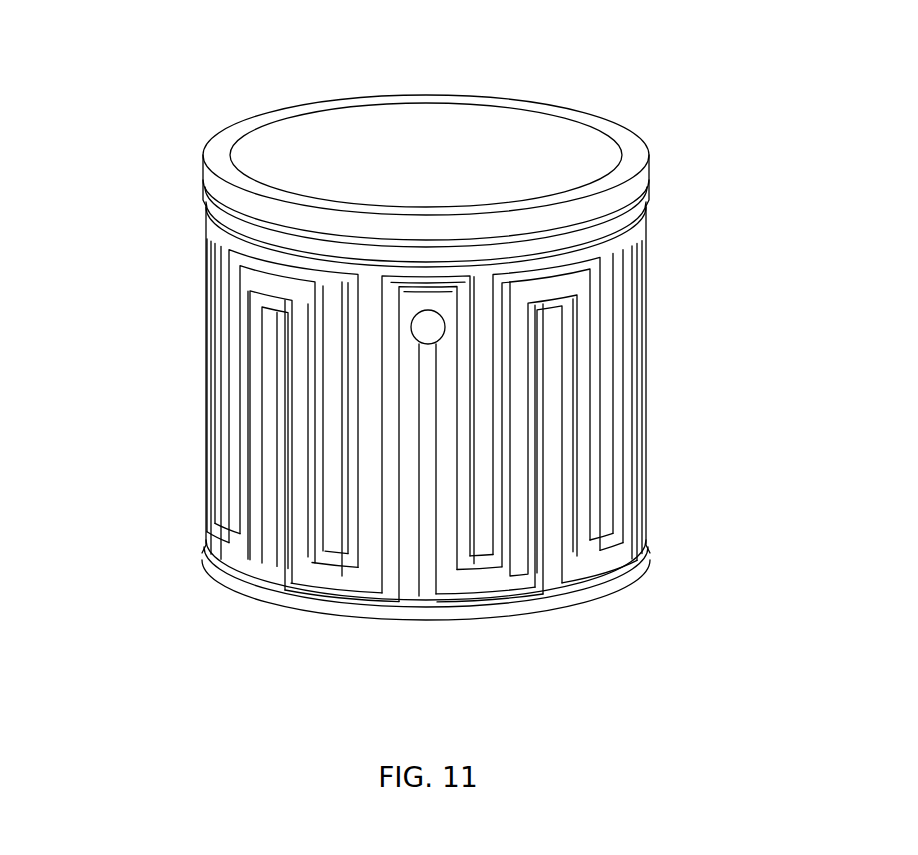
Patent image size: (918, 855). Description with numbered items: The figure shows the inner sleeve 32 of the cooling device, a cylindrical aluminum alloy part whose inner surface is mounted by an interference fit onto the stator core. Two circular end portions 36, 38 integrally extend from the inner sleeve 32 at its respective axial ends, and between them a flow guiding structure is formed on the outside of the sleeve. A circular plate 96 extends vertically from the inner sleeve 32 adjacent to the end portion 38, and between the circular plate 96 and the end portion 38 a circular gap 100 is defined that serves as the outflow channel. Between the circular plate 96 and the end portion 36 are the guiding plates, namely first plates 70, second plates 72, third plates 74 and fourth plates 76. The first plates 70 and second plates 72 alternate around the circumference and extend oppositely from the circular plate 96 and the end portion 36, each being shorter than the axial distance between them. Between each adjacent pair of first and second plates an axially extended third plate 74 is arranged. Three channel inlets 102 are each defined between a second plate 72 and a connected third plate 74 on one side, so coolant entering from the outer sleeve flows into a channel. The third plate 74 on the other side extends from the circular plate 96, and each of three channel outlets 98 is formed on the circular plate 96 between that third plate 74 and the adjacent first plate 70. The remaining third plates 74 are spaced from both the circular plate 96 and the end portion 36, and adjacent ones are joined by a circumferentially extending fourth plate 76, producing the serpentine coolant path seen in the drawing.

The inner sleeve 32 is at (163, 481).
The end portion 36 is at (580, 592).
The end portion 38 is at (385, 97).
The first plate 70 is at (331, 494).
The second plate 72 is at (268, 505).
The third plate 74 is at (299, 512).
The fourth plate 76 is at (548, 290).
The circular plate 96 is at (630, 235).
The channel outlet 98 is at (353, 266).
The circular gap 100 is at (287, 243).
The channel inlet 102 is at (428, 327).